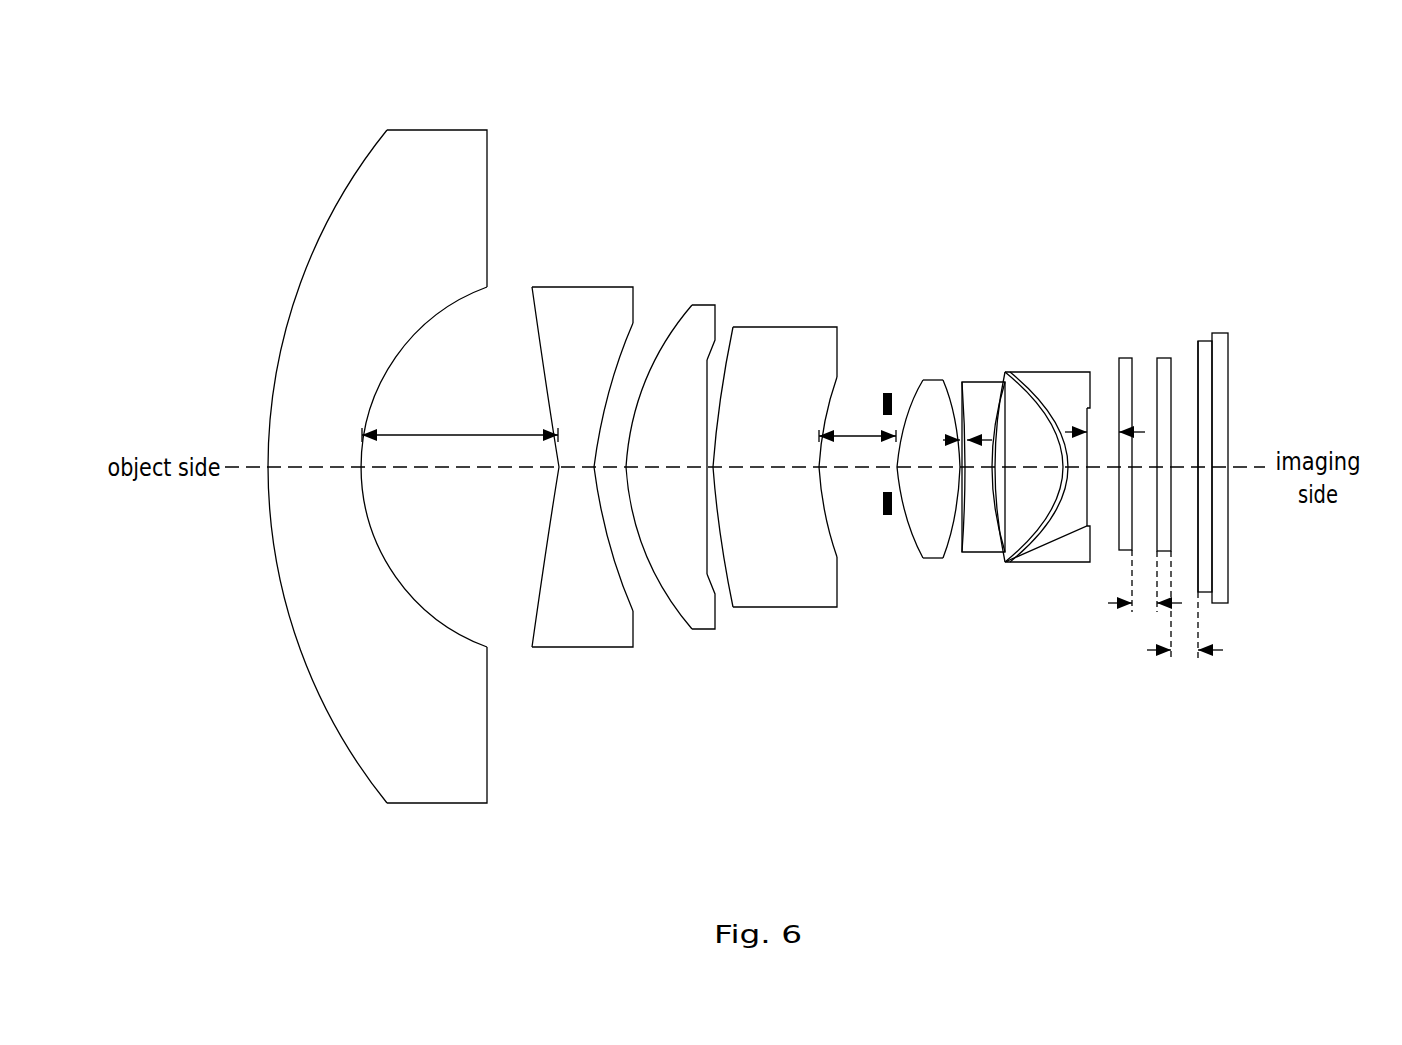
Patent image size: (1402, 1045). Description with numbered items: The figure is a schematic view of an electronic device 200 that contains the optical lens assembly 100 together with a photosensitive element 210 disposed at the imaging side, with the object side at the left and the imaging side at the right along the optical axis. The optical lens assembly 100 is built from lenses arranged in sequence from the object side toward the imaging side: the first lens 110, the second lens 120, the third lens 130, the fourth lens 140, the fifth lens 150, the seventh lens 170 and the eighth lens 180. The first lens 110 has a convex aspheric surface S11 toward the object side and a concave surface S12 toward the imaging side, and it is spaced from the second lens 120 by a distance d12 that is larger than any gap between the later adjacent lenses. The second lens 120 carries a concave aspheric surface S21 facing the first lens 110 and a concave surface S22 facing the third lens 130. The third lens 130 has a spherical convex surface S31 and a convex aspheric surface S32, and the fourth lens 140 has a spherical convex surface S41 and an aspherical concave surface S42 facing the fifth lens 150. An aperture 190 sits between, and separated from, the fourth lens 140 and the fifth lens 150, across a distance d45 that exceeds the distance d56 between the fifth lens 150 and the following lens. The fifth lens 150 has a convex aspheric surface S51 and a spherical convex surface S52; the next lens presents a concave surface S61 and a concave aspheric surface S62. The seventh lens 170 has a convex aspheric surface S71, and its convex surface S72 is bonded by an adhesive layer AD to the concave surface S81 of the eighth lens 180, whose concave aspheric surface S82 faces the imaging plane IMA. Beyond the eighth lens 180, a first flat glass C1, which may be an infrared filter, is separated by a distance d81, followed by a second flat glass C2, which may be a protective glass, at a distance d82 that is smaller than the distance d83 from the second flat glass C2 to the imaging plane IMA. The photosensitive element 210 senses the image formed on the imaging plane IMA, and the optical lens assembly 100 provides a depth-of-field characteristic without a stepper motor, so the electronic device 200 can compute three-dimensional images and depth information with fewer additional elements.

The electronic device 200 is at (207, 132).
The optical lens assembly 100 is at (866, 210).
The first lens 110 is at (437, 140).
The second lens 120 is at (588, 297).
The third lens 130 is at (703, 312).
The fourth lens 140 is at (785, 335).
The fifth lens 150 is at (930, 375).
The seventh lens 170 is at (1003, 400).
The eighth lens 180 is at (1063, 385).
The aperture 190 is at (877, 393).
The photosensitive element 210 is at (1220, 333).
The first flat glass C1 is at (1125, 358).
The second flat glass C2 is at (1165, 358).
The imaging plane IMA is at (1197, 392).
The adhesive layer AD is at (1062, 482).
The convex aspheric surface S11 is at (313, 686).
The concave surface S12 is at (363, 490).
The concave aspheric surface S21 is at (553, 517).
The concave surface S22 is at (612, 558).
The convex surface S31 is at (645, 350).
The convex aspheric surface S32 is at (708, 540).
The convex surface S41 is at (723, 348).
The concave surface S42 is at (823, 487).
The convex aspheric surface S51 is at (900, 528).
The convex surface S52 is at (953, 555).
The concave surface S61 is at (963, 405).
The concave aspheric surface S62 is at (988, 470).
The convex aspheric surface S71 is at (1000, 493).
The convex surface S72 is at (1062, 502).
The concave surface S81 is at (1043, 417).
The concave aspheric surface S82 is at (1092, 398).
The distance between the first lens and the second lens d12 is at (460, 421).
The distance between the fourth lens and the fifth lens d45 is at (857, 424).
The distance between the fifth lens and the sixth lens d56 is at (964, 432).
The distance between the eighth lens and the first flat glass d81 is at (1103, 434).
The distance between the first flat glass and the second flat glass d82 is at (1145, 594).
The distance between the second flat glass and the imaging plane d83 is at (1185, 618).